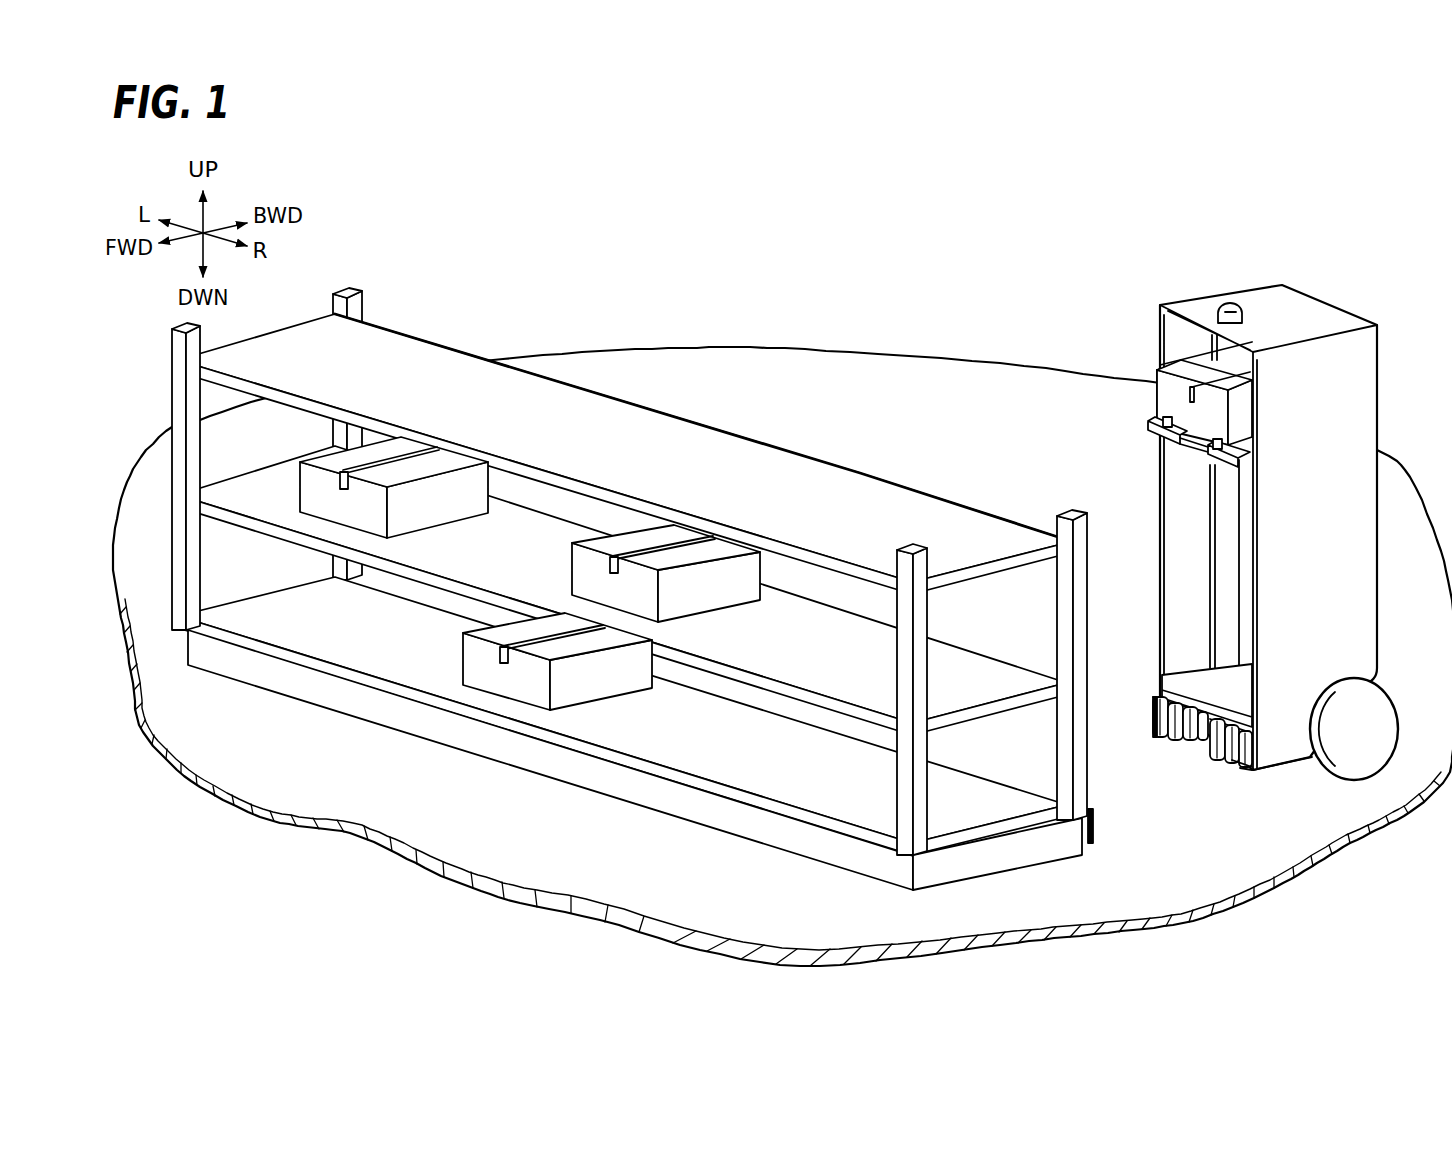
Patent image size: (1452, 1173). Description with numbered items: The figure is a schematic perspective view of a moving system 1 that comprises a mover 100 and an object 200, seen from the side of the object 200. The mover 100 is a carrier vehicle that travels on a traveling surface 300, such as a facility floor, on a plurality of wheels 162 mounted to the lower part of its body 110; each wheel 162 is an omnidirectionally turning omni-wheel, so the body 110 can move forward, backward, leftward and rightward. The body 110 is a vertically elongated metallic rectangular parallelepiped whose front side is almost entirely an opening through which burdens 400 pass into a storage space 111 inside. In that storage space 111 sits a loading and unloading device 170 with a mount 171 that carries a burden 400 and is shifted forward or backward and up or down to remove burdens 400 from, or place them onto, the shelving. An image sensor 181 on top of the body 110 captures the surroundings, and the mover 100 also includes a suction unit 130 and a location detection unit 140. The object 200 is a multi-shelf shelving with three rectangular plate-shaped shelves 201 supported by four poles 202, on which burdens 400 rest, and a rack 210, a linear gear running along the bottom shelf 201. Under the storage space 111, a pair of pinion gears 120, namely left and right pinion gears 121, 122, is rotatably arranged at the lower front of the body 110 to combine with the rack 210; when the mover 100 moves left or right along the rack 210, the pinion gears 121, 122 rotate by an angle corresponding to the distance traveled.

The moving system 1 is at (835, 283).
The mover 100 is at (1200, 562).
The body 110 is at (1266, 527).
The storage space 111 is at (1192, 517).
The pinion gear 120 is at (1176, 769).
The pinion gear 121 is at (1165, 730).
The pinion gear 122 is at (1223, 757).
The suction unit 130 is at (1243, 775).
The location detection unit 140 is at (1246, 769).
The wheel 162 is at (1383, 715).
The loading and unloading device 170 is at (1133, 442).
The mount 171 is at (1150, 424).
The image sensor 181 is at (1243, 316).
The object 200 is at (635, 587).
The shelf 201 is at (253, 502).
The pole 202 is at (177, 345).
The rack 210 is at (1094, 831).
The traveling surface 300 is at (473, 845).
The burden 400 is at (445, 515).